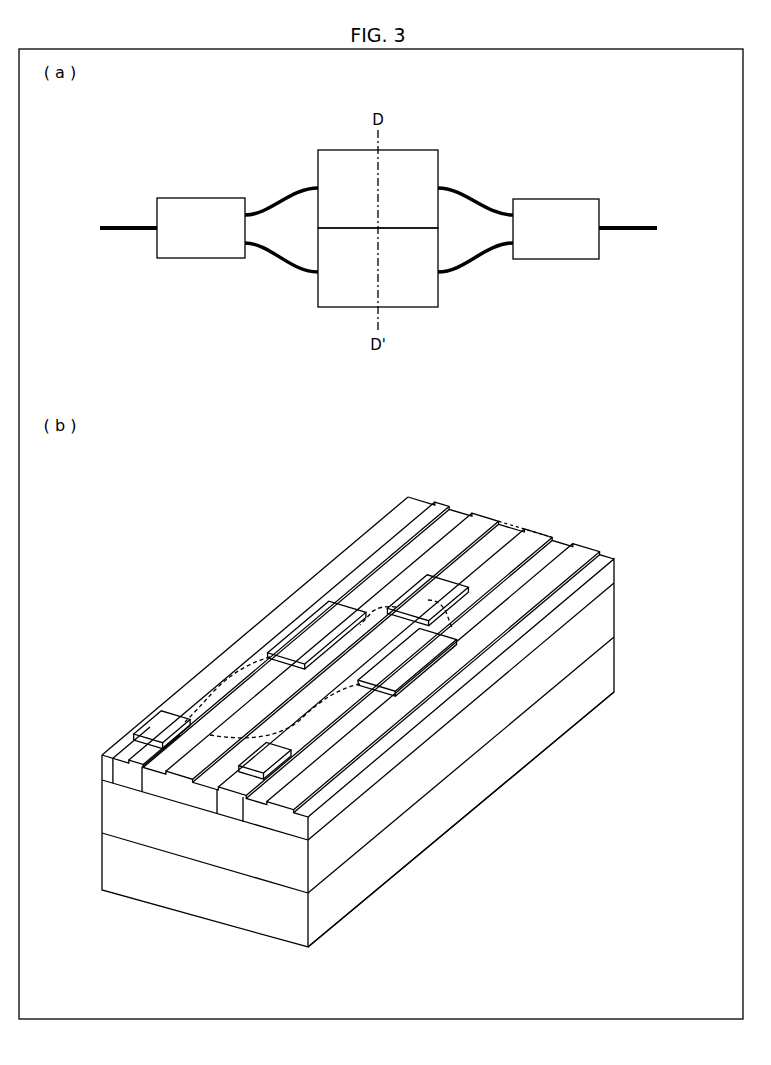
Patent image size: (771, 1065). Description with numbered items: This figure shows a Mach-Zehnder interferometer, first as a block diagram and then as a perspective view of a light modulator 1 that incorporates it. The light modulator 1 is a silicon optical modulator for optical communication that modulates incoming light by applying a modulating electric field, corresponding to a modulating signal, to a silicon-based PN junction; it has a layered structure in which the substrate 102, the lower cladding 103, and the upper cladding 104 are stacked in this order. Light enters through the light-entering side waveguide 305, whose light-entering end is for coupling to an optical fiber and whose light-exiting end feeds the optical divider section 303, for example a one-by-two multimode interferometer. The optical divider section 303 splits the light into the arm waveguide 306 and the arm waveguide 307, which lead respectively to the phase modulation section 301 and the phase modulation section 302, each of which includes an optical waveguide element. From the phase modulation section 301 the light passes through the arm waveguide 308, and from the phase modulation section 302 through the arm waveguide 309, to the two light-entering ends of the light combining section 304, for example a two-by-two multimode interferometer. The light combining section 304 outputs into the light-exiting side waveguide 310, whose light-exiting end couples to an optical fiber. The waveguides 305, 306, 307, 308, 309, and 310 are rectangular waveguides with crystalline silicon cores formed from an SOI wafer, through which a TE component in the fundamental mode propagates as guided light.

The light modulator 1 is at (240, 580).
The substrate 102 is at (614, 674).
The lower cladding 103 is at (614, 616).
The upper cladding 104 is at (614, 574).
The phase modulation section 301 is at (455, 868).
The phase modulation section 302 is at (322, 626).
The optical divider section 303 is at (420, 600).
The light combining section 304 is at (108, 724).
The light-entering side waveguide 305 is at (134, 224).
The arm waveguide 306 is at (262, 212).
The arm waveguide 307 is at (258, 258).
The arm waveguide 308 is at (494, 212).
The arm waveguide 309 is at (493, 258).
The light-exiting side waveguide 310 is at (631, 226).